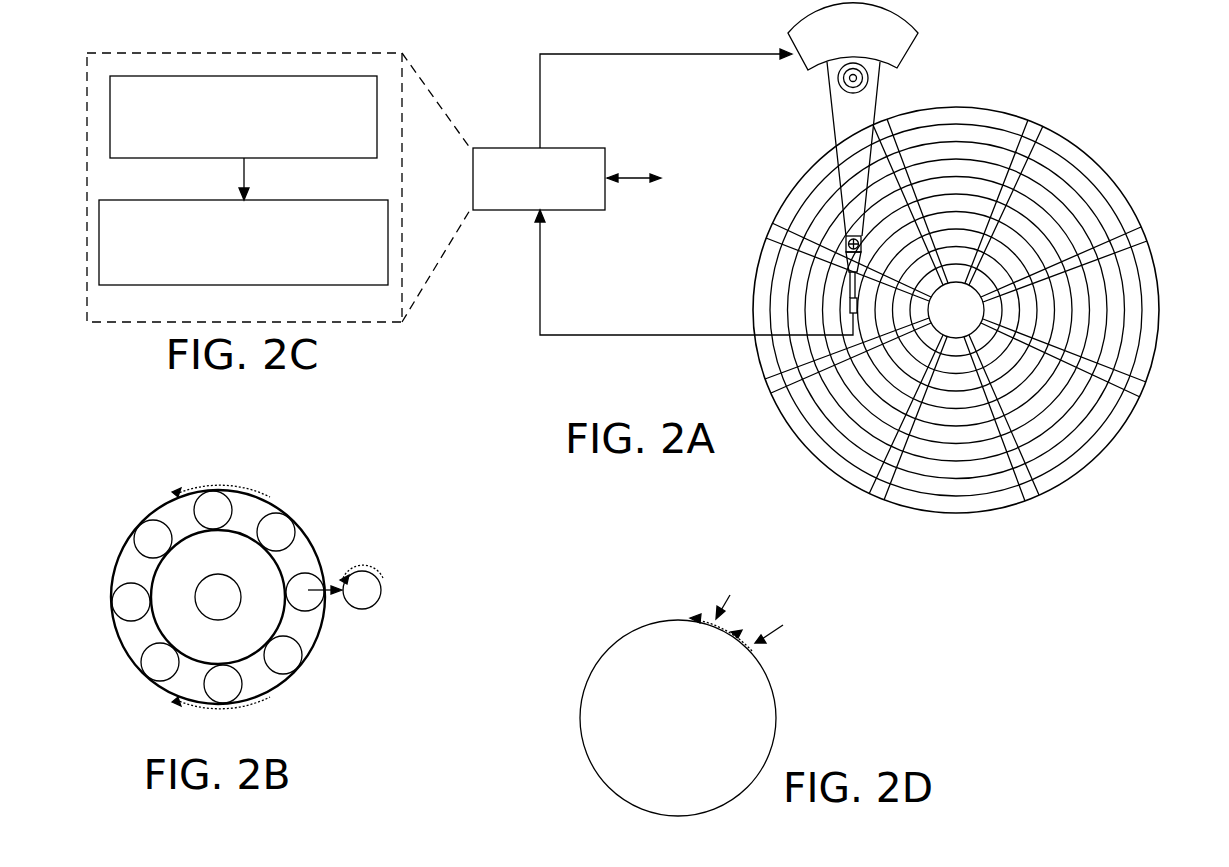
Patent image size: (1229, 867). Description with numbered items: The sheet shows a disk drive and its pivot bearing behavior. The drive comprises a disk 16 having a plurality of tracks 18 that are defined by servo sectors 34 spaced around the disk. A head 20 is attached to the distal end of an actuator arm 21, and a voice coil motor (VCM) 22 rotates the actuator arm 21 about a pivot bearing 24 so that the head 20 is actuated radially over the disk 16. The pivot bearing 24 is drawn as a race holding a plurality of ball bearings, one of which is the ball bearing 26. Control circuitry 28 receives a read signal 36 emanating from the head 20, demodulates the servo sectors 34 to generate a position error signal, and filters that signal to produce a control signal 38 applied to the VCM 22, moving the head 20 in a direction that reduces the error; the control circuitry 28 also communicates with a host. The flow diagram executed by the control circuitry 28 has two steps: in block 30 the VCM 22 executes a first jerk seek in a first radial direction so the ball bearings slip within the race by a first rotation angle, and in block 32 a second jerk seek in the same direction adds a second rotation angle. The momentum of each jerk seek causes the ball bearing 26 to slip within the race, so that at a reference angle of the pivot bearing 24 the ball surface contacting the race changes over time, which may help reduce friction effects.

In FIG. 2A, the disk 16 is at (1098, 156).
In FIG. 2A, the tracks 18 is at (962, 133).
In FIG. 2A, the head 20 is at (847, 305).
In FIG. 2A, the actuator arm 21 is at (839, 133).
In FIG. 2A, the voice coil motor (VCM) 22 is at (802, 68).
In FIG. 2A, the pivot bearing 24 is at (853, 93).
In FIG. 2B, the pivot bearing 24 is at (336, 516).
In FIG. 2B, the ball bearing 26 is at (362, 609).
In FIG. 2D, the ball bearing 26 is at (580, 722).
In FIG. 2A, the control circuitry 28 is at (573, 148).
In FIG. 2C, the block 30 is at (338, 158).
In FIG. 2C, the block 32 is at (350, 285).
In FIG. 2A, the servo sectors 34 is at (1044, 126).
In FIG. 2A, the read signal 36 is at (622, 335).
In FIG. 2A, the control signal 38 is at (540, 96).